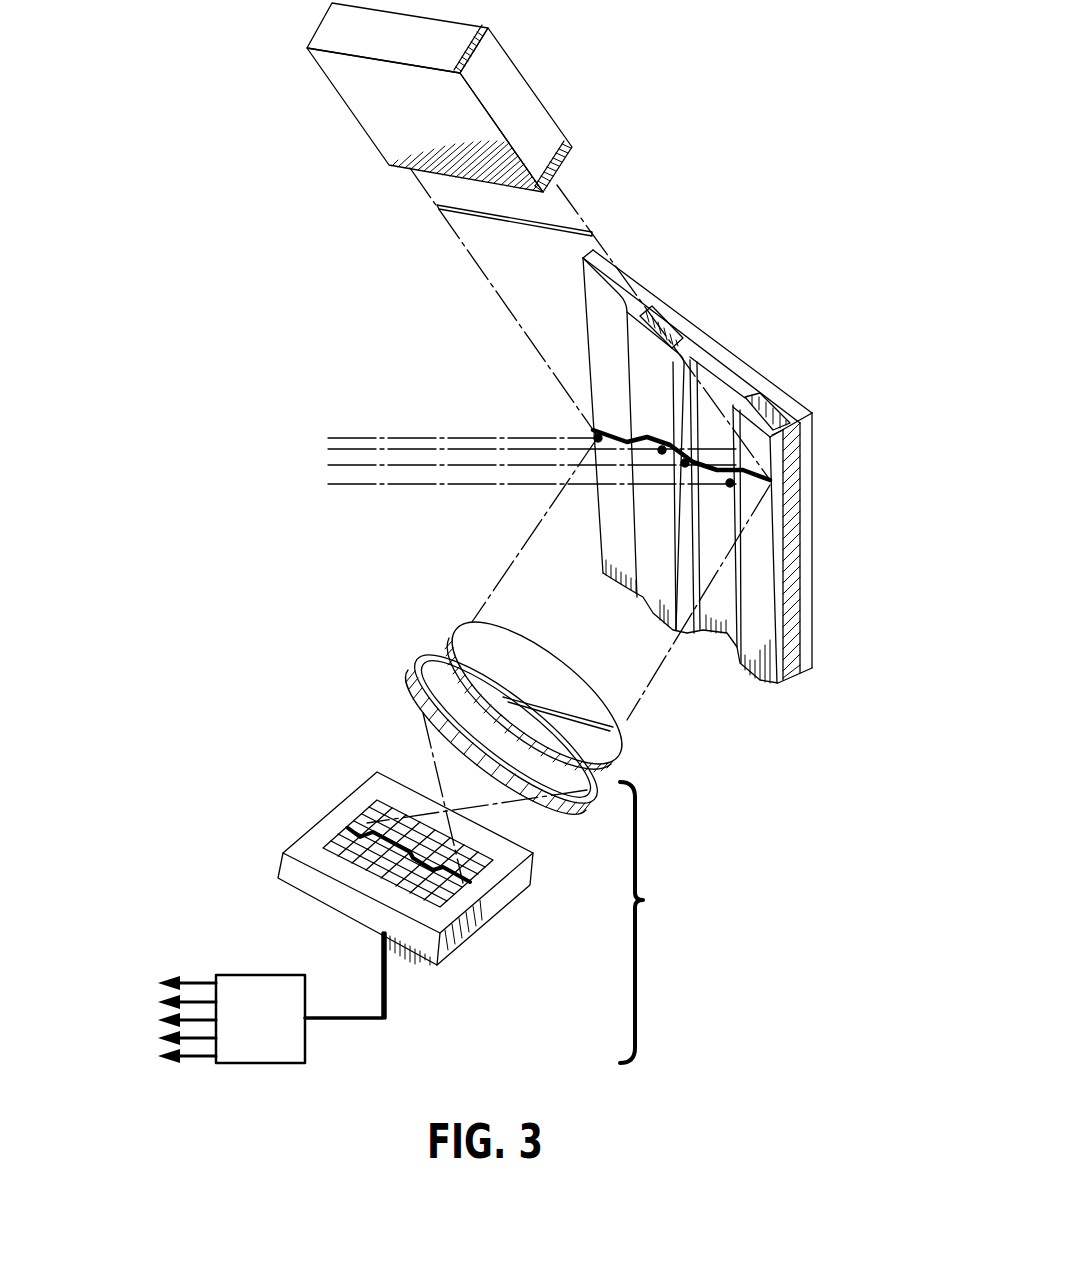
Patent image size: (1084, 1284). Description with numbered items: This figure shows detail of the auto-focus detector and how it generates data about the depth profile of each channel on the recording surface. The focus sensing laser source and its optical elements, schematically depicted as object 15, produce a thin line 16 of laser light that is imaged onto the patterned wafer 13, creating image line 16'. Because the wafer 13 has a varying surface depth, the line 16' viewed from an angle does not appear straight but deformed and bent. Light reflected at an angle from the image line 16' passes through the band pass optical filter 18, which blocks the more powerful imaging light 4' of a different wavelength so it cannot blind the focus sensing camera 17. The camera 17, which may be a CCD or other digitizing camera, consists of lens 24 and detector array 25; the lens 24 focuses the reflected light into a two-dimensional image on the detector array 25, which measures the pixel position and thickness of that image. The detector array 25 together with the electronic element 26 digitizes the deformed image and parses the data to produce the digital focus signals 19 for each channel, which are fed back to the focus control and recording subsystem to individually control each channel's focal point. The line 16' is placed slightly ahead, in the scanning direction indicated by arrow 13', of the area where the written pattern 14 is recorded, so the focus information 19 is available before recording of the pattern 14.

The focus sensing laser source and optical elements 15 is at (337, 96).
The thin line of laser light 16 is at (552, 188).
The light plane 4' is at (534, 418).
The written pattern 14 is at (593, 437).
The image line 16' is at (642, 368).
The patterned wafer 13 is at (697, 461).
The arrow indicating scanning direction 13' is at (748, 484).
The band pass optical filter 18 is at (620, 738).
The lens 24 is at (423, 673).
The detector array 25 is at (333, 803).
The camera 17 is at (656, 922).
The electronic element 26 is at (240, 977).
The digital focus signals 19 is at (195, 980).